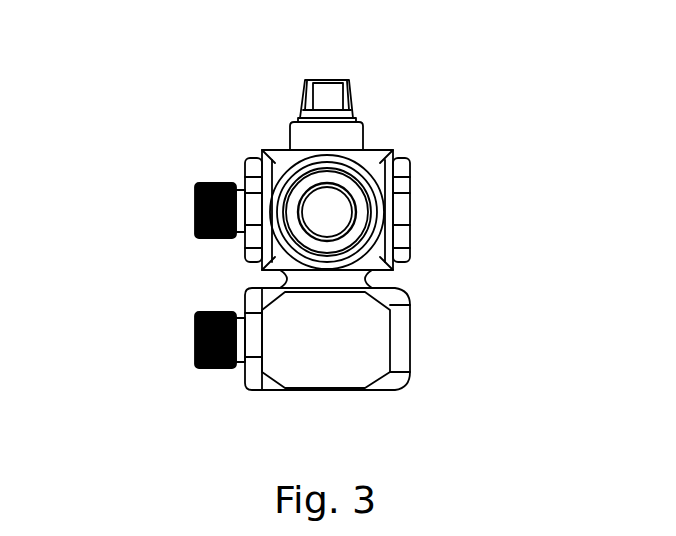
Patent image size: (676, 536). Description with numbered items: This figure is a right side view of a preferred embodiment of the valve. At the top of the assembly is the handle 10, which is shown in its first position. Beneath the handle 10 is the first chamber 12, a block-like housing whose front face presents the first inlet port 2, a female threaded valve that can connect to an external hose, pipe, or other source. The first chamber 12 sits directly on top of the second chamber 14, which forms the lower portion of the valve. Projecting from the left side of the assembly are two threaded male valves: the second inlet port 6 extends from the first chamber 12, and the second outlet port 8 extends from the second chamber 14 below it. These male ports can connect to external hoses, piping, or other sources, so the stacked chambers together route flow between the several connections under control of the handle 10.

The first inlet port 2 is at (338, 220).
The second inlet port 6 is at (195, 212).
The second outlet port 8 is at (195, 357).
The handle 10 is at (345, 92).
The first chamber 12 is at (385, 158).
The second chamber 14 is at (372, 370).